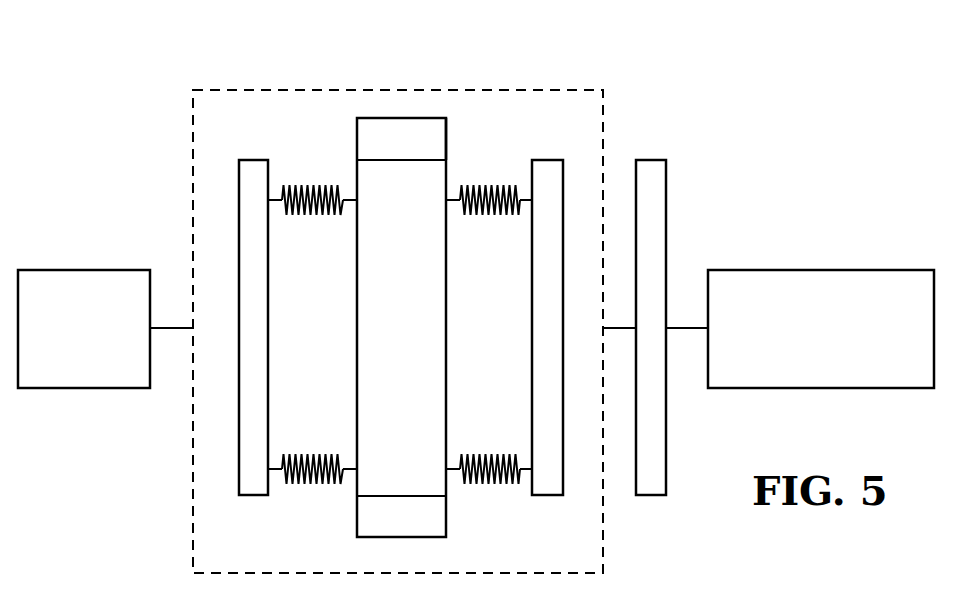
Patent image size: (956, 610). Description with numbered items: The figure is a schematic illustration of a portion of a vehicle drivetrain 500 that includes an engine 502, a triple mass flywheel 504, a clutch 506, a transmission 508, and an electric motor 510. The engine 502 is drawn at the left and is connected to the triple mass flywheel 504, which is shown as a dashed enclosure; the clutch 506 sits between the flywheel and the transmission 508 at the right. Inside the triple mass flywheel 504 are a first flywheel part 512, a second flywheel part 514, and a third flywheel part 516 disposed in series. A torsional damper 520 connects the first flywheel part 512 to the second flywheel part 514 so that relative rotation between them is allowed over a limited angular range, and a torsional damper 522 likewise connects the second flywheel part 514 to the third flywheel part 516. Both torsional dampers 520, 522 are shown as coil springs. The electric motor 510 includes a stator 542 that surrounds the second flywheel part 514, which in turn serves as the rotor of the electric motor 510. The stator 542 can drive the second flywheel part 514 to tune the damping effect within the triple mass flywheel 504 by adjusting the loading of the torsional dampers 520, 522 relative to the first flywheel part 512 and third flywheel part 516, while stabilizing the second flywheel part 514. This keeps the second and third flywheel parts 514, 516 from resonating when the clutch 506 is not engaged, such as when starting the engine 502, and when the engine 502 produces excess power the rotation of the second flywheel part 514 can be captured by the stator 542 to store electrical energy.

The vehicle drivetrain 500 is at (793, 102).
The engine 502 is at (68, 270).
The triple mass flywheel 504 is at (618, 100).
The clutch 506 is at (666, 212).
The transmission 508 is at (802, 270).
The electric motor 510 is at (404, 112).
The first flywheel part 512 is at (250, 160).
The second flywheel part 514 is at (390, 158).
The third flywheel part 516 is at (549, 160).
The torsional damper 520 is at (327, 186).
The torsional damper 522 is at (488, 215).
The stator 542 is at (446, 135).